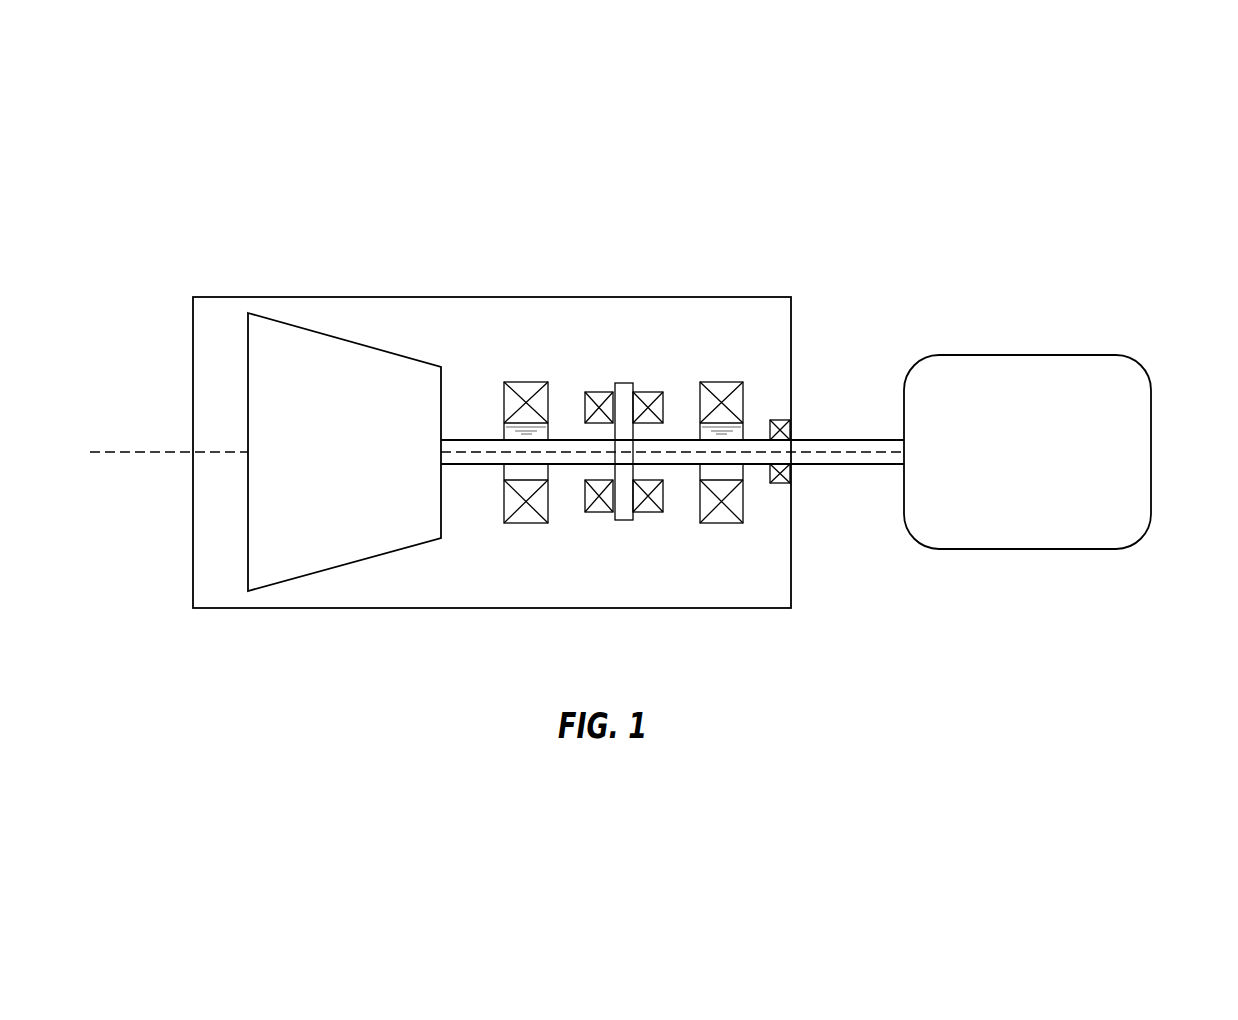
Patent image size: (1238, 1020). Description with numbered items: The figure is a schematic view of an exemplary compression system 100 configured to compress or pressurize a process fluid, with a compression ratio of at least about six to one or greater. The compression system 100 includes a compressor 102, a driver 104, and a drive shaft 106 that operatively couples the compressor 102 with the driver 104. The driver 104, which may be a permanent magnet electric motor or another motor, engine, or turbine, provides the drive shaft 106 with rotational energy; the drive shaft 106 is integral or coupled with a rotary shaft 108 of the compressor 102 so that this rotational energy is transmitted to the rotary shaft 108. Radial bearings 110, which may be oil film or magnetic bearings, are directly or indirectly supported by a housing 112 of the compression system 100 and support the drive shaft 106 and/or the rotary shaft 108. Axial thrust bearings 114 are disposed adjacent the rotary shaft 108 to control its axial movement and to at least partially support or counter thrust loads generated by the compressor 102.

The compression system 100 is at (175, 146).
The compressor 102 is at (366, 466).
The driver 104 is at (1049, 467).
The drive shaft 106 is at (838, 453).
The rotary shaft 108 is at (487, 450).
The radial bearings 110 is at (527, 380).
The housing 112 is at (628, 296).
The axial thrust bearings 114 is at (648, 392).